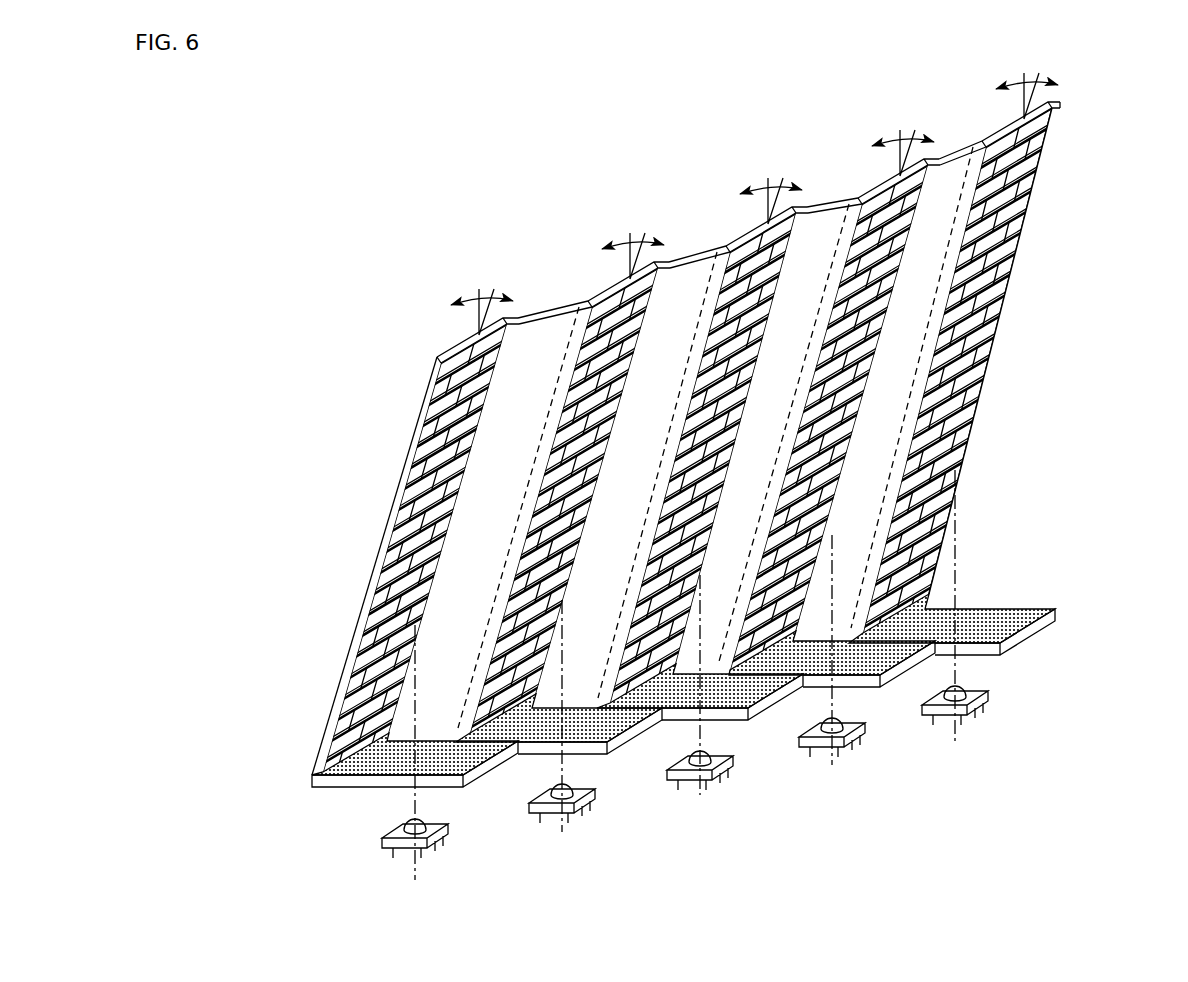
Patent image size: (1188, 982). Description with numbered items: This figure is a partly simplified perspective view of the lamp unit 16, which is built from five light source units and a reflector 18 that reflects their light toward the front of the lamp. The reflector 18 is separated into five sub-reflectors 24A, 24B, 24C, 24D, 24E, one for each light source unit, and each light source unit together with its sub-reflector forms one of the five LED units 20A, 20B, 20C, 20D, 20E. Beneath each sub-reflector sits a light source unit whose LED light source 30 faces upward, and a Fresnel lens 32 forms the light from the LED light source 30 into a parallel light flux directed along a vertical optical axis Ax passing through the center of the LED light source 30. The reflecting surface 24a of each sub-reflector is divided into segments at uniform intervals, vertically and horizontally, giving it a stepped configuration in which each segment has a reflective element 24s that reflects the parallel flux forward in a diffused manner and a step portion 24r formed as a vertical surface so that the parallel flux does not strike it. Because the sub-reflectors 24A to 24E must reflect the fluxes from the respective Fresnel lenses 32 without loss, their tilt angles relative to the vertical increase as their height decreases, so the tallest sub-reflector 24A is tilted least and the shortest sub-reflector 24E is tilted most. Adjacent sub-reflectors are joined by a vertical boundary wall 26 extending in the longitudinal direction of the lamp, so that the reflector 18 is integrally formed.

The lamp unit 16 is at (343, 178).
The reflector 18 is at (363, 560).
The LED unit 20A is at (1007, 685).
The LED unit 20B is at (892, 728).
The LED unit 20C is at (762, 764).
The LED unit 20D is at (607, 772).
The LED unit 20E is at (462, 810).
The sub-reflector 24A is at (980, 140).
The sub-reflector 24B is at (856, 197).
The sub-reflector 24C is at (724, 245).
The sub-reflector 24D is at (586, 300).
The sub-reflector 24E is at (435, 356).
The reflecting surface 24a is at (992, 330).
The step portion 24r is at (1013, 237).
The reflective element 24s is at (1010, 226).
The vertical boundary wall 26 is at (625, 466).
The LED light source 30 is at (960, 690).
The Fresnel lens 32 is at (1010, 607).
The optical axis Ax is at (965, 524).